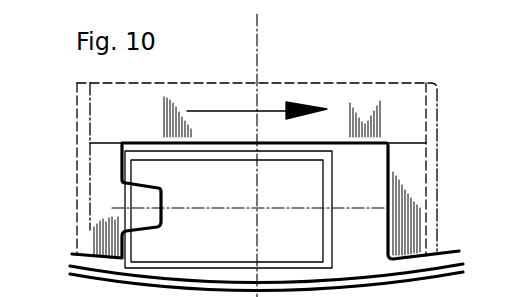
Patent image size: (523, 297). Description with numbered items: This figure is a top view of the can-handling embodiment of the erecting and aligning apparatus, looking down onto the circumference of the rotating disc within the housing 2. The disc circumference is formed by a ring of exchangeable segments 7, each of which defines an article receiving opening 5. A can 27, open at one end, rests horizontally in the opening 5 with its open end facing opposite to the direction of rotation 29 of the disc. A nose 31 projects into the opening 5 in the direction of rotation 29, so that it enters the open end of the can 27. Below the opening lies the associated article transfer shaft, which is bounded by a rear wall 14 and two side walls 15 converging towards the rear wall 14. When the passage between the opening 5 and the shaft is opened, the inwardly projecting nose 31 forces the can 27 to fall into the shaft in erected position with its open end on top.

The housing 2 is at (468, 271).
The opening 5 is at (372, 165).
The segment 7 is at (412, 193).
The rear wall 14 is at (397, 97).
The side wall 15 is at (78, 145).
The can 27 is at (305, 238).
The direction of rotation 29 is at (270, 112).
The nose 31 is at (142, 197).